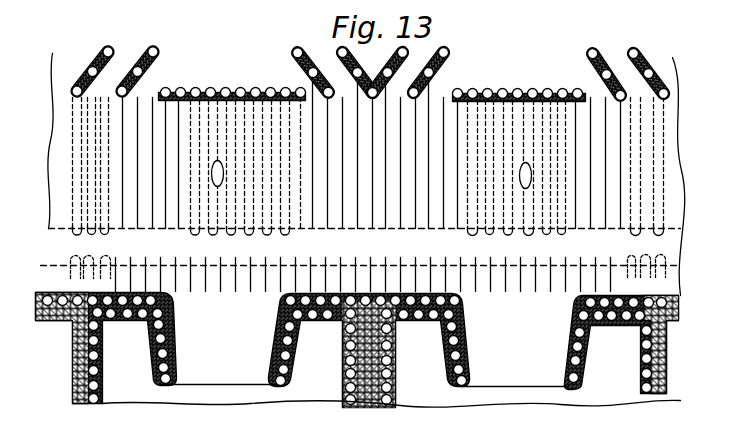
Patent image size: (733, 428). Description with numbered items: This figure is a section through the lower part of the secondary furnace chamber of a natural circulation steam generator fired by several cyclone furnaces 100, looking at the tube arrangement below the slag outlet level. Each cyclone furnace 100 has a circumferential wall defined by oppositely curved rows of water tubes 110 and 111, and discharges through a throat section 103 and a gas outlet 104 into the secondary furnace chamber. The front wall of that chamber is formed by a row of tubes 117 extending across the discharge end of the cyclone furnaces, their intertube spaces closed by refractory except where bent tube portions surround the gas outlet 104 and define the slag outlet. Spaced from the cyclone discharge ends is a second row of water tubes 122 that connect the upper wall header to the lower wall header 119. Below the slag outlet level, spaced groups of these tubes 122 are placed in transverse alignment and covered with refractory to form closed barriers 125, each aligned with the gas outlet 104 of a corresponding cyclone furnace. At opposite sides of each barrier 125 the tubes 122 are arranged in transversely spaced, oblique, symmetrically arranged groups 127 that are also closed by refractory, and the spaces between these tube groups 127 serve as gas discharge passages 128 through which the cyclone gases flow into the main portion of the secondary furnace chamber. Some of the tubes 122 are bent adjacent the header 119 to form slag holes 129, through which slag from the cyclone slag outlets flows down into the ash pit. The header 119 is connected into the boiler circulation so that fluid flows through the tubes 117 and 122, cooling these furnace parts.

The cyclone furnace 100 is at (367, 278).
The throat section 103 is at (270, 383).
The gas outlet 104 is at (240, 348).
The row of water tubes 110 is at (72, 382).
The row of water tubes 111 is at (342, 386).
The row of tubes 117 is at (151, 292).
The lower wall header 119 is at (364, 224).
The second row of water tubes 122 is at (162, 87).
The closed barrier 125 is at (195, 101).
The oblique tube group 127 is at (150, 50).
The gas discharge passage 128 is at (398, 86).
The slag hole 129 is at (211, 175).